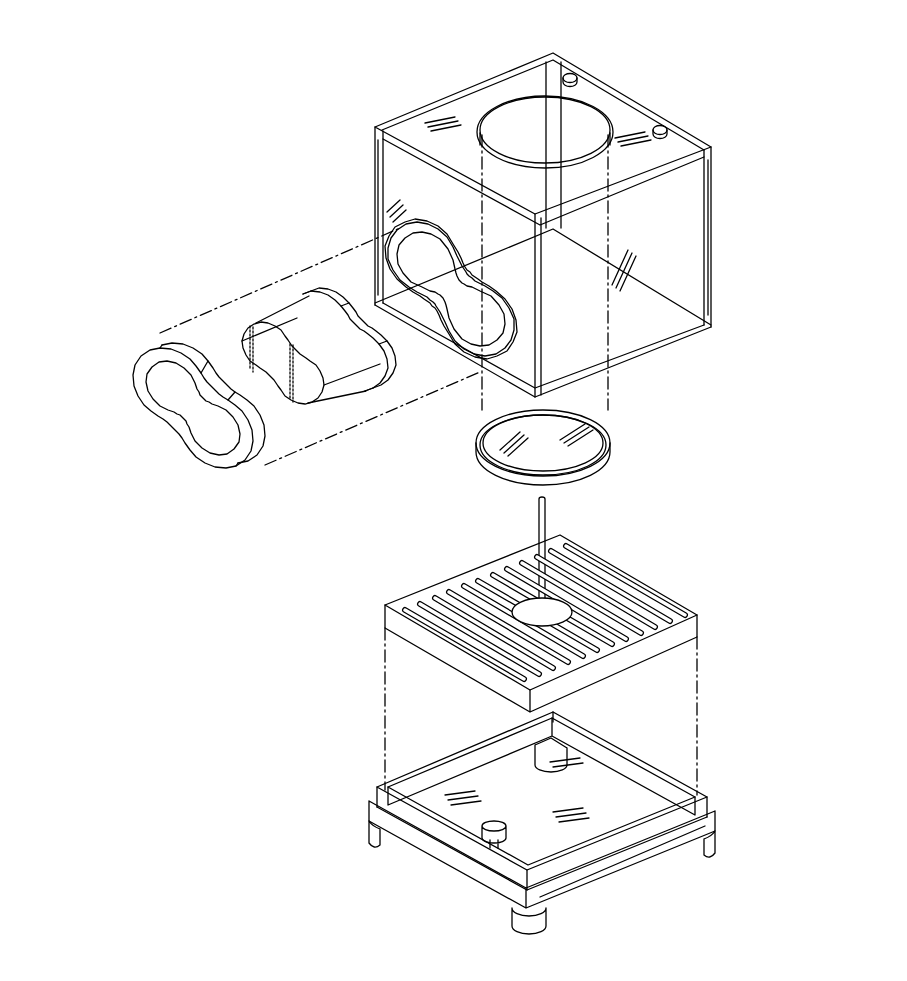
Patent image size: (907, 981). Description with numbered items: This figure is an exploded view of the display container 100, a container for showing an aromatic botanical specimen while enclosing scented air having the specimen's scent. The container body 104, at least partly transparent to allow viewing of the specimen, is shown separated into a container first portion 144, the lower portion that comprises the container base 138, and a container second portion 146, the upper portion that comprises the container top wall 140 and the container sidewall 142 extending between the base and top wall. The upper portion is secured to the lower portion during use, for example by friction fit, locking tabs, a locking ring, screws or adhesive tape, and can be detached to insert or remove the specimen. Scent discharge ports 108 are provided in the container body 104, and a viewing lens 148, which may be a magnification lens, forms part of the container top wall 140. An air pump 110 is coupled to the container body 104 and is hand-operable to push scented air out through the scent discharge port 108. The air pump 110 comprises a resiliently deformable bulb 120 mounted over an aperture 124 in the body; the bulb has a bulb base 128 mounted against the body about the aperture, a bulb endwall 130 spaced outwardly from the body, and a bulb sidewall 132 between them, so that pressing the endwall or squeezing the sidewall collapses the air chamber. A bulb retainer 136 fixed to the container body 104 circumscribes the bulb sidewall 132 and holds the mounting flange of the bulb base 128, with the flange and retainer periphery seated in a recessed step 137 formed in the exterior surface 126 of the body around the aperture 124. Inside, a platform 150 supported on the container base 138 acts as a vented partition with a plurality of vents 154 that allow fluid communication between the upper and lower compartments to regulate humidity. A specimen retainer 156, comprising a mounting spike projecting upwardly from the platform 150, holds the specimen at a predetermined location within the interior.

The display container 100 is at (196, 92).
The container body 104 is at (730, 139).
The scent discharge port 108 is at (573, 70).
The air pump 110 is at (206, 270).
The resiliently deformable bulb 120 is at (238, 320).
The aperture 124 is at (468, 322).
The exterior surface 126 is at (403, 186).
The bulb base 128 is at (392, 388).
The bulb endwall 130 is at (300, 393).
The bulb sidewall 132 is at (357, 393).
The bulb retainer 136 is at (133, 357).
The recessed step 137 is at (396, 238).
The container base 138 is at (650, 857).
The container top wall 140 is at (468, 92).
The container sidewall 142 is at (713, 276).
The container first portion 144 is at (800, 798).
The container second portion 146 is at (781, 360).
The viewing lens 148 is at (605, 452).
The platform 150 is at (698, 630).
The vents 154 is at (646, 602).
The specimen retainer 156 is at (532, 530).